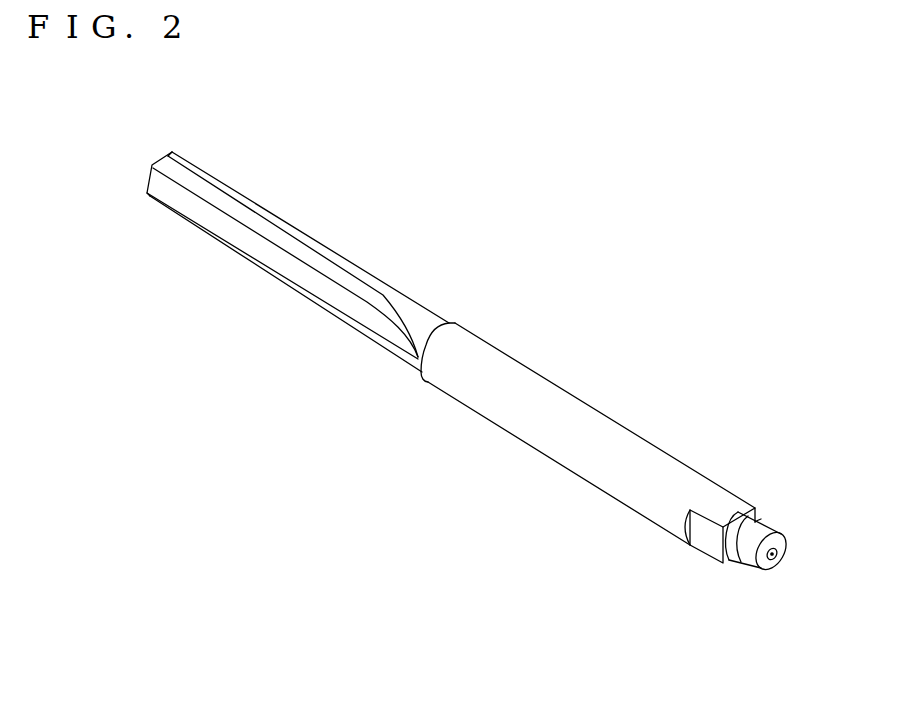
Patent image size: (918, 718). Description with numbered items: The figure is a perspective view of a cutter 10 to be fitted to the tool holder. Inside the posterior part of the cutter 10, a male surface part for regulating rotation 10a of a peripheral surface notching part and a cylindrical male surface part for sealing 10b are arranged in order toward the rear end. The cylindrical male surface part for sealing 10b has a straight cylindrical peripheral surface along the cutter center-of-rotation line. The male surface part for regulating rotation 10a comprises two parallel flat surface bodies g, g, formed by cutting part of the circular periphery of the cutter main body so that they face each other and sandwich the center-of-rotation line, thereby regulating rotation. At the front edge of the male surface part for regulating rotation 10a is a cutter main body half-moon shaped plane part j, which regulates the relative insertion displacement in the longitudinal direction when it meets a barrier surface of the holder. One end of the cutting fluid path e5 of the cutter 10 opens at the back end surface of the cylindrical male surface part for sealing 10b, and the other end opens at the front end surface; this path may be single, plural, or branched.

The cutter 10 is at (496, 340).
The male surface part for regulating rotation 10a is at (709, 374).
The cylindrical male surface part for sealing 10b is at (663, 667).
The flat surface body for regulating rotation g is at (758, 520).
The cutter main body half-moon shaped plane part j is at (688, 545).
The cutting fluid path e5 is at (774, 559).